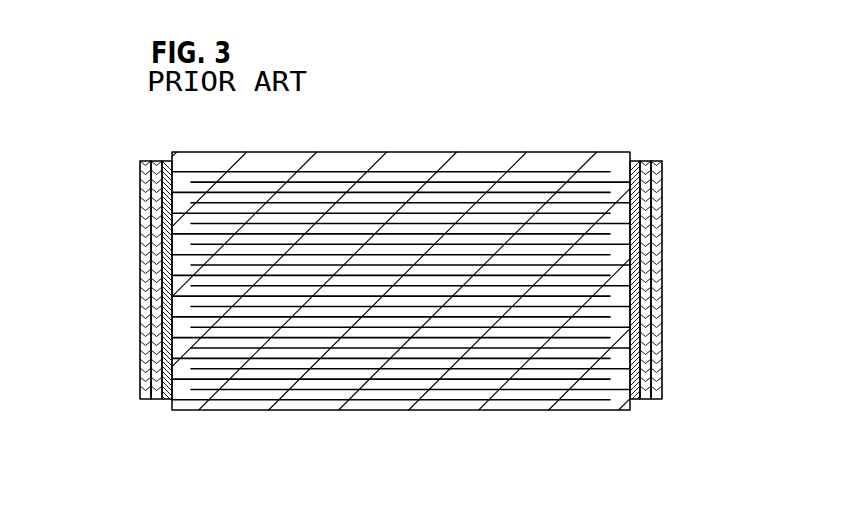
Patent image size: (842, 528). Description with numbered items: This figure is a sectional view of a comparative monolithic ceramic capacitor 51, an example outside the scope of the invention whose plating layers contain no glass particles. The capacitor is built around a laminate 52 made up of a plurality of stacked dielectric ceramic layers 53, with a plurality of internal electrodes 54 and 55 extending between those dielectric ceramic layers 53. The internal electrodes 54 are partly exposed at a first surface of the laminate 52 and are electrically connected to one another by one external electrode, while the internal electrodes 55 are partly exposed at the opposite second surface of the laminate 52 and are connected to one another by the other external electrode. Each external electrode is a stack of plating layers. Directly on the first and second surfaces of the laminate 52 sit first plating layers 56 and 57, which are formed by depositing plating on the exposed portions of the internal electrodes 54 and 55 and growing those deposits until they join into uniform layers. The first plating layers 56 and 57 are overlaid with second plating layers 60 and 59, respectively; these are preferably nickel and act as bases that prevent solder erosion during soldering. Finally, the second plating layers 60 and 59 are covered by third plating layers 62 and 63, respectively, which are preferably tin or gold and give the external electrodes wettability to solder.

The monolithic ceramic capacitor 51 is at (382, 152).
The laminate 52 is at (530, 151).
The dielectric ceramic layers 53 is at (582, 163).
The internal electrodes 54 is at (187, 377).
The internal electrodes 55 is at (590, 392).
The first plating layer 56 is at (163, 343).
The first plating layer 57 is at (633, 347).
The second plating layer 59 is at (645, 305).
The second plating layer 60 is at (152, 301).
The third plating layer 62 is at (148, 250).
The third plating layer 63 is at (653, 263).